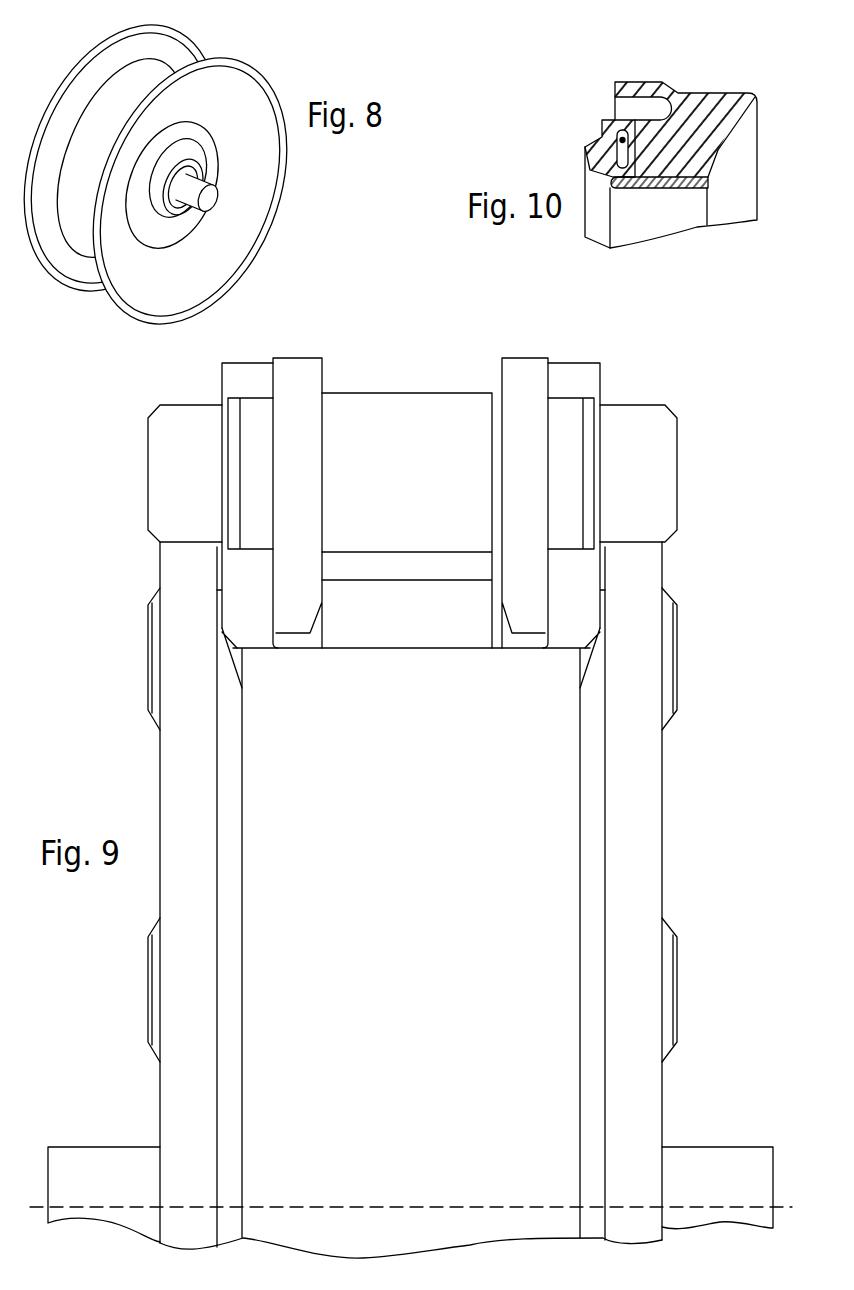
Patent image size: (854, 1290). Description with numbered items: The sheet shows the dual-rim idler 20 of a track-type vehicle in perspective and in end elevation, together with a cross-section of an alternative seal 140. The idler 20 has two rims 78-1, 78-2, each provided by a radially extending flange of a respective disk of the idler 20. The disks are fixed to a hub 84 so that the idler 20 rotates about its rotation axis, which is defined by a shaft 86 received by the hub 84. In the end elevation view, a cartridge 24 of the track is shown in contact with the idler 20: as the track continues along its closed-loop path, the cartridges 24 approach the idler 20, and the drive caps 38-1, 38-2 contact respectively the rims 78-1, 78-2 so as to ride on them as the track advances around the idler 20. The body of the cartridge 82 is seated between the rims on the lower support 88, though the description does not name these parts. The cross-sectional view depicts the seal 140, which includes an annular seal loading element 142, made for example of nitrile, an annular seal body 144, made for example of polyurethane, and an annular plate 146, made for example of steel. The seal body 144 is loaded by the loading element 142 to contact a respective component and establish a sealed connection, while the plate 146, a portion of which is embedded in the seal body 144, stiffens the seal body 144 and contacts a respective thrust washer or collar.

In FIG. 8, the idler 20 is at (205, 192).
In FIG. 9, the idler 20 is at (411, 776).
In FIG. 9, the cartridge 24 is at (415, 393).
In FIG. 9, the drive cap 38-1 is at (631, 405).
In FIG. 9, the drive cap 38-2 is at (173, 448).
In FIG. 8, the rim 78-1 is at (118, 312).
In FIG. 9, the rim 78-1 is at (622, 808).
In FIG. 8, the rim 78-2 is at (41, 268).
In FIG. 9, the rim 78-2 is at (185, 773).
In FIG. 9, the hub block 82 is at (397, 657).
In FIG. 8, the hub 84 is at (182, 216).
In FIG. 8, the shaft 86 is at (208, 204).
In FIG. 9, the support shaft 88 is at (88, 1155).
In FIG. 10, the seal 140 is at (624, 164).
In FIG. 10, the seal loading element 142 is at (700, 96).
In FIG. 10, the seal body 144 is at (587, 143).
In FIG. 10, the plate 146 is at (653, 190).